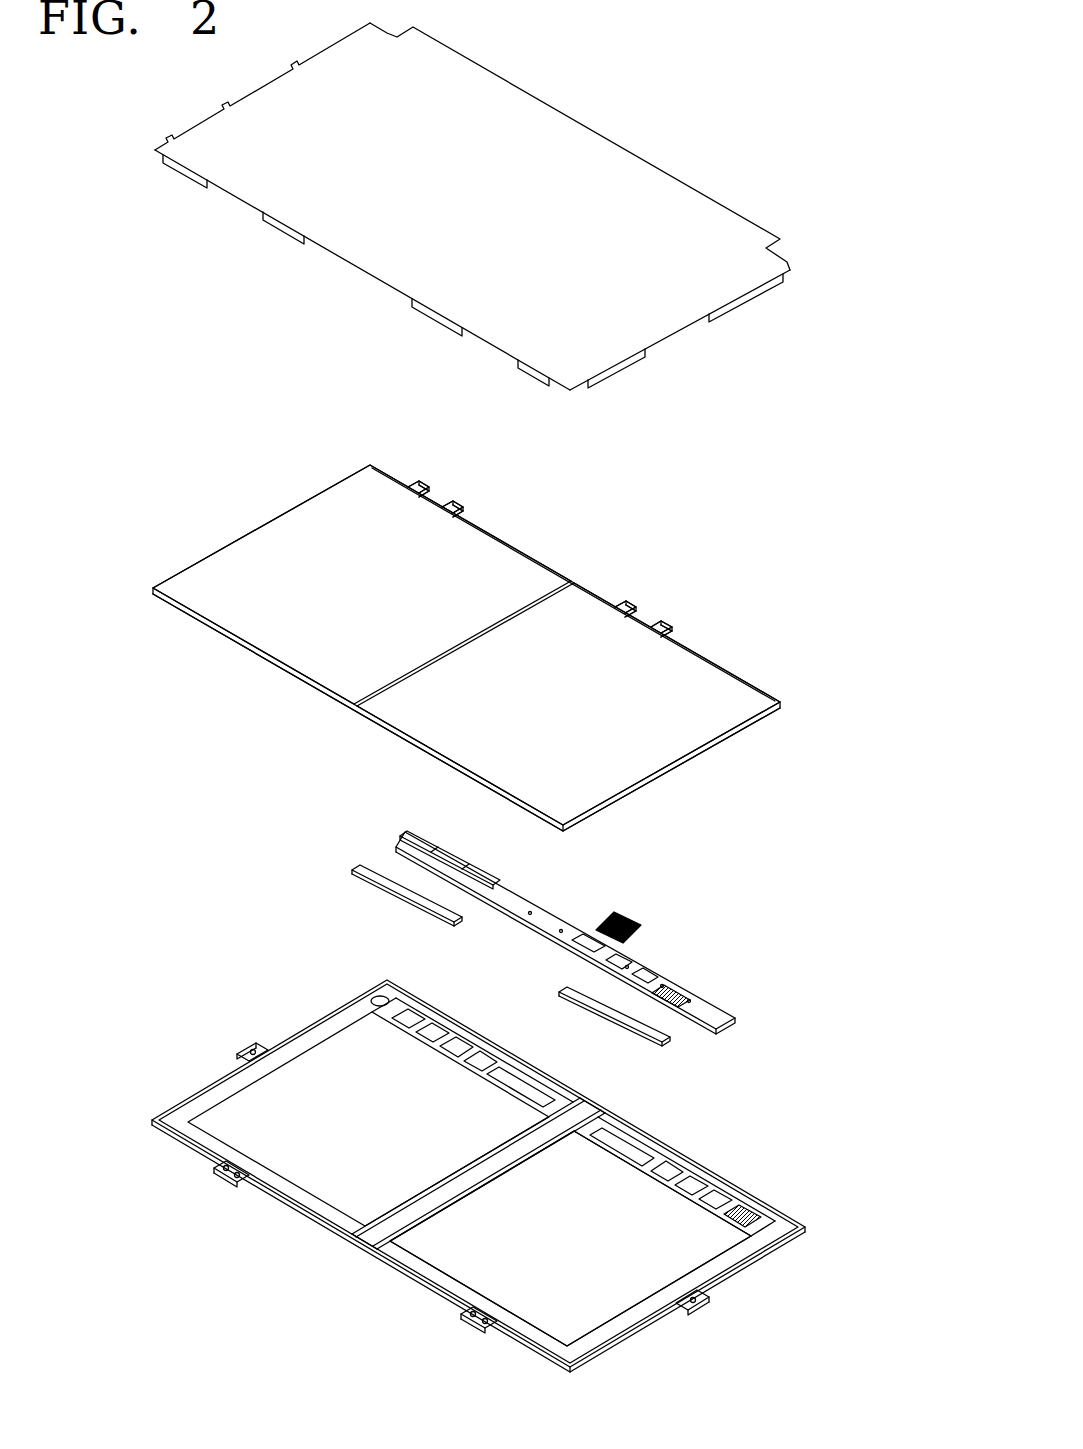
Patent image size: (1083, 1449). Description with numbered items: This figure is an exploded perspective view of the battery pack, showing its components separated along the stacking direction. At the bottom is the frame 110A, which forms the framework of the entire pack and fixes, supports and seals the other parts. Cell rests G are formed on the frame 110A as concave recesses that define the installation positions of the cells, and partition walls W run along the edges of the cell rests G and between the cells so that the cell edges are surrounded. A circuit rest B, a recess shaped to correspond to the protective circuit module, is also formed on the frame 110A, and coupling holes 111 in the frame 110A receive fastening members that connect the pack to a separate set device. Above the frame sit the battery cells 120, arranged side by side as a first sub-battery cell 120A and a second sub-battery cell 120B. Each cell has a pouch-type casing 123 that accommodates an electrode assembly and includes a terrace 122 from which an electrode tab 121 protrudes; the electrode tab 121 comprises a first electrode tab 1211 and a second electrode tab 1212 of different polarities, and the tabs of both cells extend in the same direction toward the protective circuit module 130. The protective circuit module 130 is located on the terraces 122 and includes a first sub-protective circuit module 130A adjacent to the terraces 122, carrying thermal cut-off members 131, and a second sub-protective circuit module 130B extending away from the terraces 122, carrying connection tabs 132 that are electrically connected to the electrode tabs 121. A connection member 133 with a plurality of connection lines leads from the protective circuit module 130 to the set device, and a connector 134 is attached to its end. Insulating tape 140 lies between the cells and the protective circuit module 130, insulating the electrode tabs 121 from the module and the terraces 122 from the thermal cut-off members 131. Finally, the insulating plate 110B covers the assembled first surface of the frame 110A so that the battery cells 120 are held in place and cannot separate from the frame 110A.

The insulating plate 110B is at (740, 235).
The frame 110A is at (786, 1193).
The coupling hole 111 is at (690, 1300).
The battery cell 120 is at (697, 433).
The first sub-battery cell 120A is at (510, 567).
The second sub-battery cell 120B is at (737, 697).
The electrode tab 121 is at (465, 411).
The first electrode tab 1211 is at (428, 480).
The second electrode tab 1212 is at (466, 502).
The terrace 122 is at (780, 702).
The casing 123 is at (770, 720).
The protective circuit module 130 is at (733, 1015).
The first sub-protective circuit module 130A is at (400, 843).
The second sub-protective circuit module 130B is at (406, 831).
The thermal cut-off member 131 is at (683, 1017).
The connection tab 132 is at (640, 967).
The connection member 133 is at (590, 932).
The connector 134 is at (630, 920).
The insulating tape 140 is at (570, 992).
The partition wall W is at (313, 1028).
The hinge portion H is at (600, 1108).
The circuit rest B is at (610, 1130).
The cell rest G is at (637, 1202).